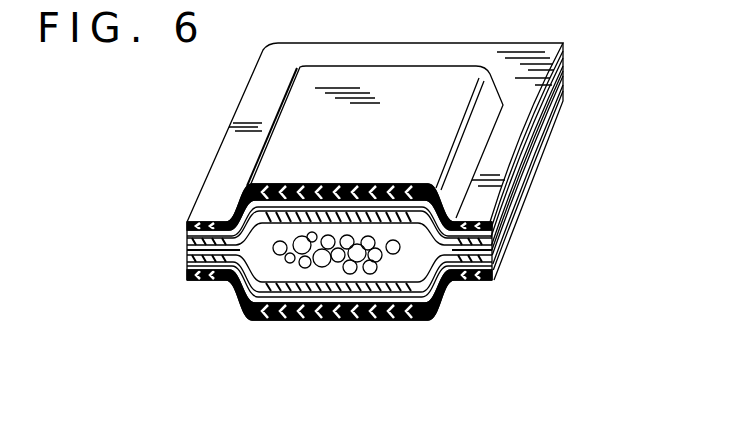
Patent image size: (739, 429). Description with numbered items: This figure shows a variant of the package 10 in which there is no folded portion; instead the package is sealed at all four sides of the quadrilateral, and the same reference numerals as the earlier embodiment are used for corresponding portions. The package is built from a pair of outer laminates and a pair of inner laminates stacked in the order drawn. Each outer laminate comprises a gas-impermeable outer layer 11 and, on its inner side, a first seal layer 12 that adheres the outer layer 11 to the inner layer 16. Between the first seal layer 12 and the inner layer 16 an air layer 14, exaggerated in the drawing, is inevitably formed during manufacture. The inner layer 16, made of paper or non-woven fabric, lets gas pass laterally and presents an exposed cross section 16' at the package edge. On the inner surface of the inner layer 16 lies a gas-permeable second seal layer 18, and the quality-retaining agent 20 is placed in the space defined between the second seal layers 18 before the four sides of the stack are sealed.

The package 10 is at (580, 139).
The outer layer 11 is at (442, 314).
The first seal layer 12 is at (388, 309).
The air layer 14 is at (246, 316).
The inner layer 16 is at (339, 281).
The exposed cross section 16' is at (177, 243).
The second seal layer 18 is at (296, 292).
The quality-retaining agent 20 is at (371, 239).